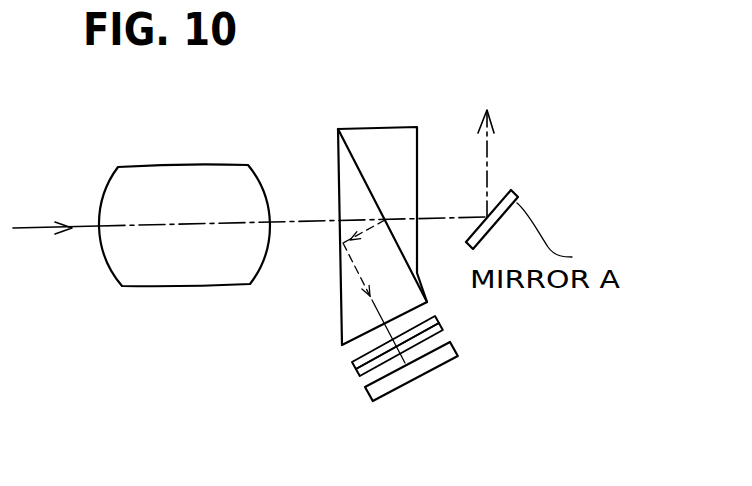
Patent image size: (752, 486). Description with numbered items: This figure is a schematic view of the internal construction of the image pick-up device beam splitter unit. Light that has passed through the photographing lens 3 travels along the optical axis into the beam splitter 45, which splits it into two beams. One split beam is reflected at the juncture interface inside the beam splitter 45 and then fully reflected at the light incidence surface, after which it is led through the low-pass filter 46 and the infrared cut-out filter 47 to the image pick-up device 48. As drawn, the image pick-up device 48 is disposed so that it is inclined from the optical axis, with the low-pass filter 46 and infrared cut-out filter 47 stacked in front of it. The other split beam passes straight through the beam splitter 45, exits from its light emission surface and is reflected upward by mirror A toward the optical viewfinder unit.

The photographing lens 3 is at (182, 285).
The beam splitter 45 is at (382, 142).
The low-pass filter 46 is at (353, 362).
The infrared cut-out filter 47 is at (357, 368).
The image pick-up device 48 is at (440, 362).